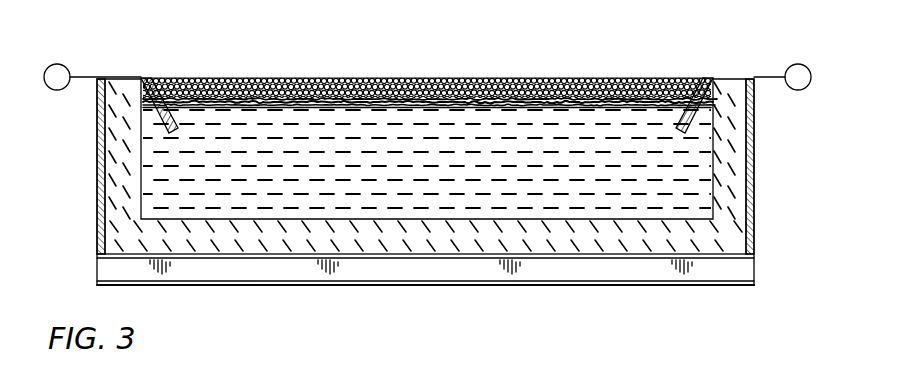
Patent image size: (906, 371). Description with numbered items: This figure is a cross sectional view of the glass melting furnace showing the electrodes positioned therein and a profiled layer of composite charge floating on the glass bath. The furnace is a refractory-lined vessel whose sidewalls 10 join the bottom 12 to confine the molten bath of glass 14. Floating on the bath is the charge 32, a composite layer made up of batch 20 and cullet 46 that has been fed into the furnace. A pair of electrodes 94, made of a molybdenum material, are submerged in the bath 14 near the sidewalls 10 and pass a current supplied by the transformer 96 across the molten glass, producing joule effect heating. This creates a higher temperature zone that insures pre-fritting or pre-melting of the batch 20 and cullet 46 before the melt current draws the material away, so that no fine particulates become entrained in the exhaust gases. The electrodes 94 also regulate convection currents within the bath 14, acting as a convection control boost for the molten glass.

The sidewalls 10 is at (107, 107).
The bottom 12 is at (575, 241).
The molten bath of glass 14 is at (434, 198).
The batch 20 is at (518, 80).
The charge 32 is at (414, 76).
The cullet 46 is at (339, 80).
The electrodes 94 is at (160, 108).
The transformer 96 is at (62, 66).